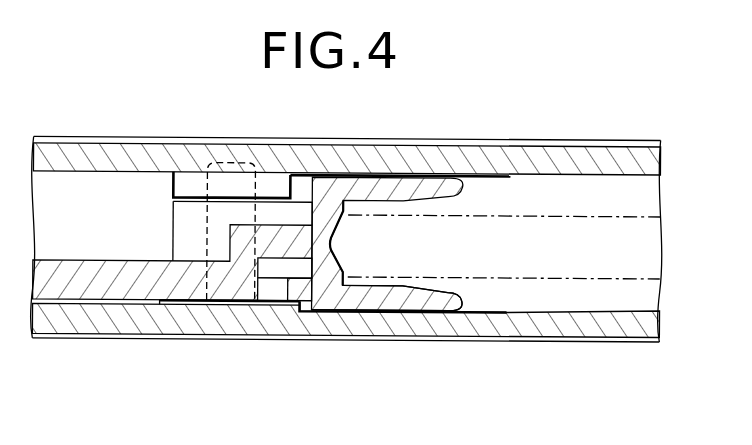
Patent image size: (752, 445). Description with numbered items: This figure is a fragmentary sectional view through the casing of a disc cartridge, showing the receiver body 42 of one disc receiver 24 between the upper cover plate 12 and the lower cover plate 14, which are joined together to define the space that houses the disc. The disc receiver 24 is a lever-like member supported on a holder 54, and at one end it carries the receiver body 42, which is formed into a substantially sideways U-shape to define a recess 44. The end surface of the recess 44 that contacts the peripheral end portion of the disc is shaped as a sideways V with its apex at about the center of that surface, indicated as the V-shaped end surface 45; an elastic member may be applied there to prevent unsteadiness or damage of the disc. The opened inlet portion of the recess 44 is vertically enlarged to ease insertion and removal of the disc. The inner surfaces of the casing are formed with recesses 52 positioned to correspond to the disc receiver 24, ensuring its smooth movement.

The upper cover plate 12 is at (183, 152).
The lower cover plate 14 is at (138, 325).
The disc receiver 24 is at (330, 190).
The receiver body 42 is at (376, 298).
The recess 44 is at (432, 237).
The V-shaped end surface 45 is at (345, 222).
The recess 52 is at (492, 180).
The holder 54 is at (188, 302).